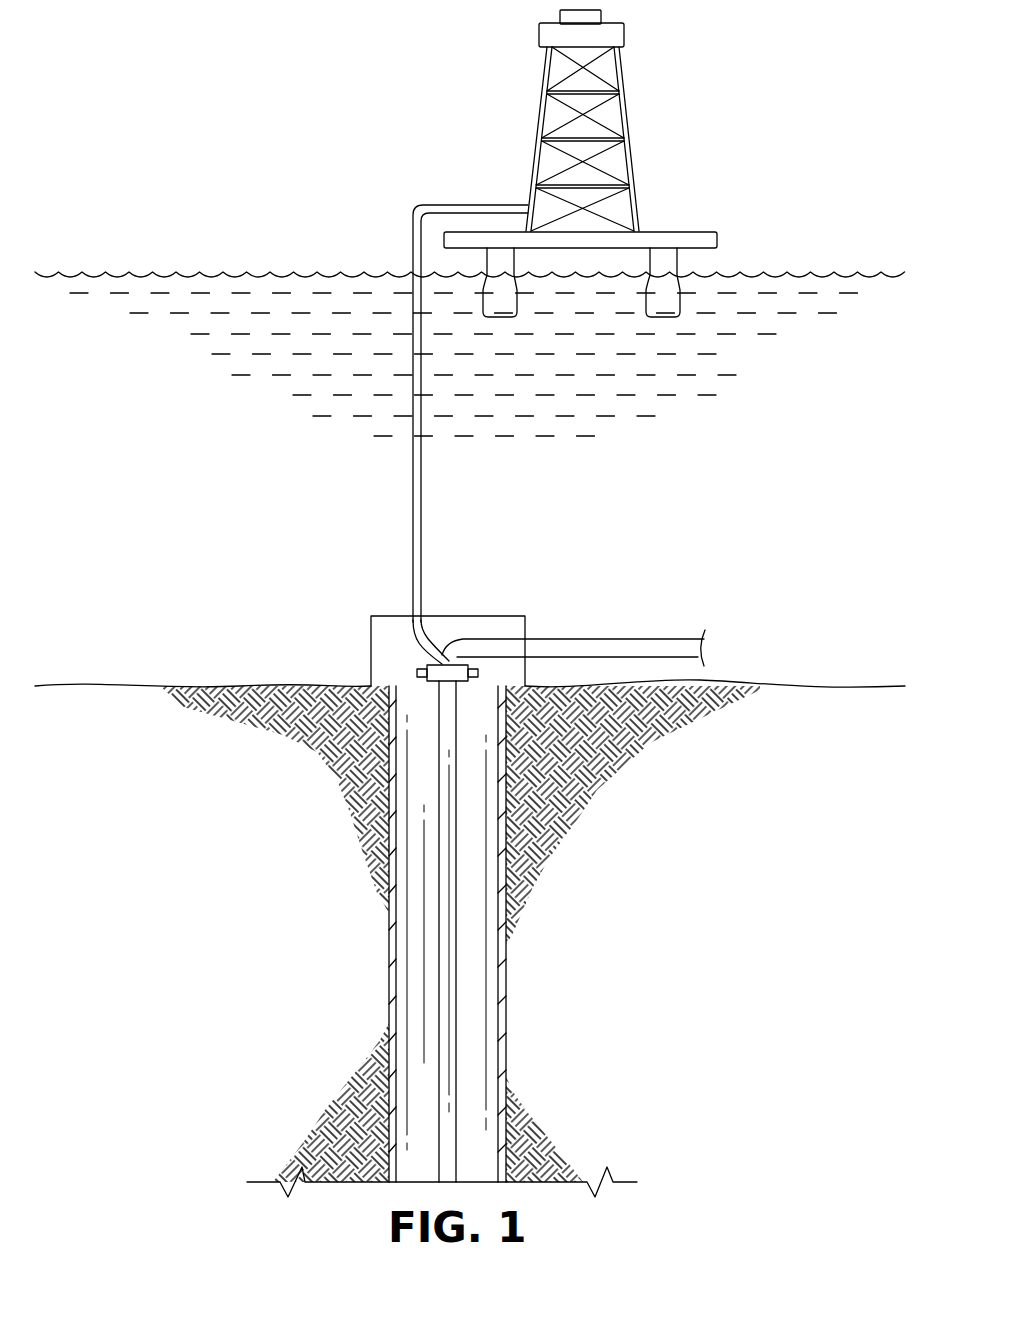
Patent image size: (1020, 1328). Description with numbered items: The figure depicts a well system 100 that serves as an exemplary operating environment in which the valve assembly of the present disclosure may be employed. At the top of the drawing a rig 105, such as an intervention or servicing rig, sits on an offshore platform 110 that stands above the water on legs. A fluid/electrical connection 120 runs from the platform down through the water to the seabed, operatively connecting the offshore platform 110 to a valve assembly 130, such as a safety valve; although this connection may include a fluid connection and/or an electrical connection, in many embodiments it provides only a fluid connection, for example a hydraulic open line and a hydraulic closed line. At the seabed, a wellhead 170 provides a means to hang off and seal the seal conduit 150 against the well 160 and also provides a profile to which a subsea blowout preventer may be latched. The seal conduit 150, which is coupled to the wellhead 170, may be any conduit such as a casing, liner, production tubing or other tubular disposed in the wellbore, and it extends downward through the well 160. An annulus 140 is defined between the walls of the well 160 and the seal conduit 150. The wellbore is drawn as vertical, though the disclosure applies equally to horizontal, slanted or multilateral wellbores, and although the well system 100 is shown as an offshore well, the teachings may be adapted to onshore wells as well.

The well system 100 is at (270, 87).
The offshore platform 110 is at (628, 113).
The rig 105 is at (632, 188).
The fluid/electrical connection 120 is at (412, 252).
The wellhead 170 is at (490, 614).
The valve assembly 130 is at (418, 675).
The well 160 is at (395, 980).
The annulus 140 is at (488, 1015).
The seal conduit 150 is at (457, 983).